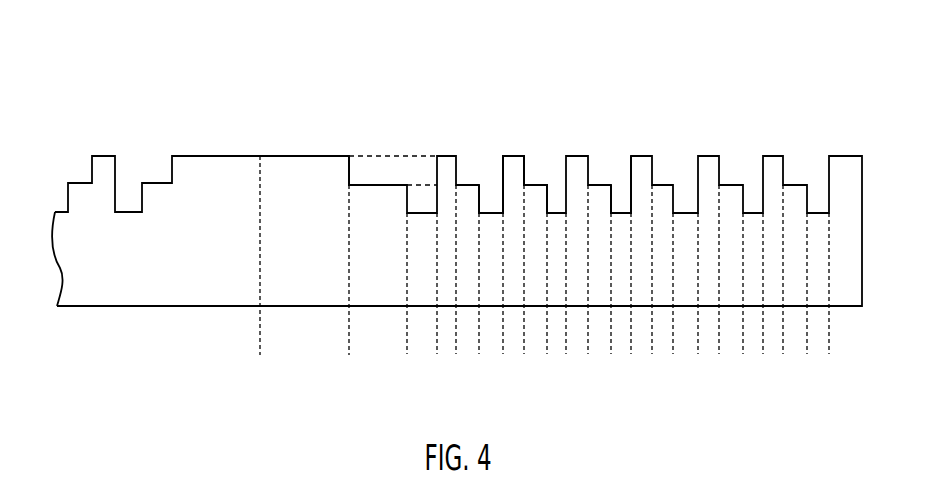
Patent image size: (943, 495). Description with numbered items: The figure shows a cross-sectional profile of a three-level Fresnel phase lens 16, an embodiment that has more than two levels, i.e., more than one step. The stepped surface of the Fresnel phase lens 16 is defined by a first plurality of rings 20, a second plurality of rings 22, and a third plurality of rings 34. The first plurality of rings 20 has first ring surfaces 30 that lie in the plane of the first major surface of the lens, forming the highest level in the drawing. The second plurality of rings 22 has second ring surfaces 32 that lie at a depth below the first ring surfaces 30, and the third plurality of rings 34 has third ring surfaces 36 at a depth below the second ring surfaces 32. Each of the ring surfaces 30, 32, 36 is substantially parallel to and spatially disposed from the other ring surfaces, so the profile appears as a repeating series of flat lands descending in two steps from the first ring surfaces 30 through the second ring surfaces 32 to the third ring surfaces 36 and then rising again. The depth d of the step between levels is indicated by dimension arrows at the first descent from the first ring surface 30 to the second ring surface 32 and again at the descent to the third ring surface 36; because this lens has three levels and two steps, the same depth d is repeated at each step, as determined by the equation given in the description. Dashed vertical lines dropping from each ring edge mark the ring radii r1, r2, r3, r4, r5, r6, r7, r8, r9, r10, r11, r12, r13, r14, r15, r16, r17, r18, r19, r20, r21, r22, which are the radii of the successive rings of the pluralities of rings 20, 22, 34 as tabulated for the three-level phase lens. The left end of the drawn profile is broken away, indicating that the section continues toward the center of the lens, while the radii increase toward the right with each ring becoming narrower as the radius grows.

The Fresnel phase lens 16 is at (164, 114).
The first plurality of rings 20 is at (312, 150).
The second plurality of rings 22 is at (361, 178).
The first ring surfaces 30 is at (508, 157).
The second ring surfaces 32 is at (538, 186).
The third plurality of rings 34 is at (493, 204).
The third ring surfaces 36 is at (623, 212).
The depth of the step between levels d is at (389, 149).
The ring radius r1 is at (286, 269).
The ring radius r2 is at (368, 295).
The ring radius r3 is at (417, 298).
The ring radius r4 is at (447, 309).
The ring radius r5 is at (466, 284).
The ring radius r6 is at (489, 309).
The ring radius r7 is at (513, 298).
The ring radius r8 is at (534, 295).
The ring radius r9 is at (556, 298).
The ring radius r10 is at (575, 309).
The ring radius r11 is at (600, 284).
The ring radius r12 is at (621, 309).
The ring radius r13 is at (642, 298).
The ring radius r14 is at (664, 295).
The ring radius r15 is at (686, 298).
The ring radius r16 is at (709, 309).
The ring radius r17 is at (731, 284).
The ring radius r18 is at (752, 309).
The ring radius r19 is at (773, 298).
The ring radius r20 is at (797, 295).
The ring radius r21 is at (817, 298).
The ring radius r22 is at (843, 309).